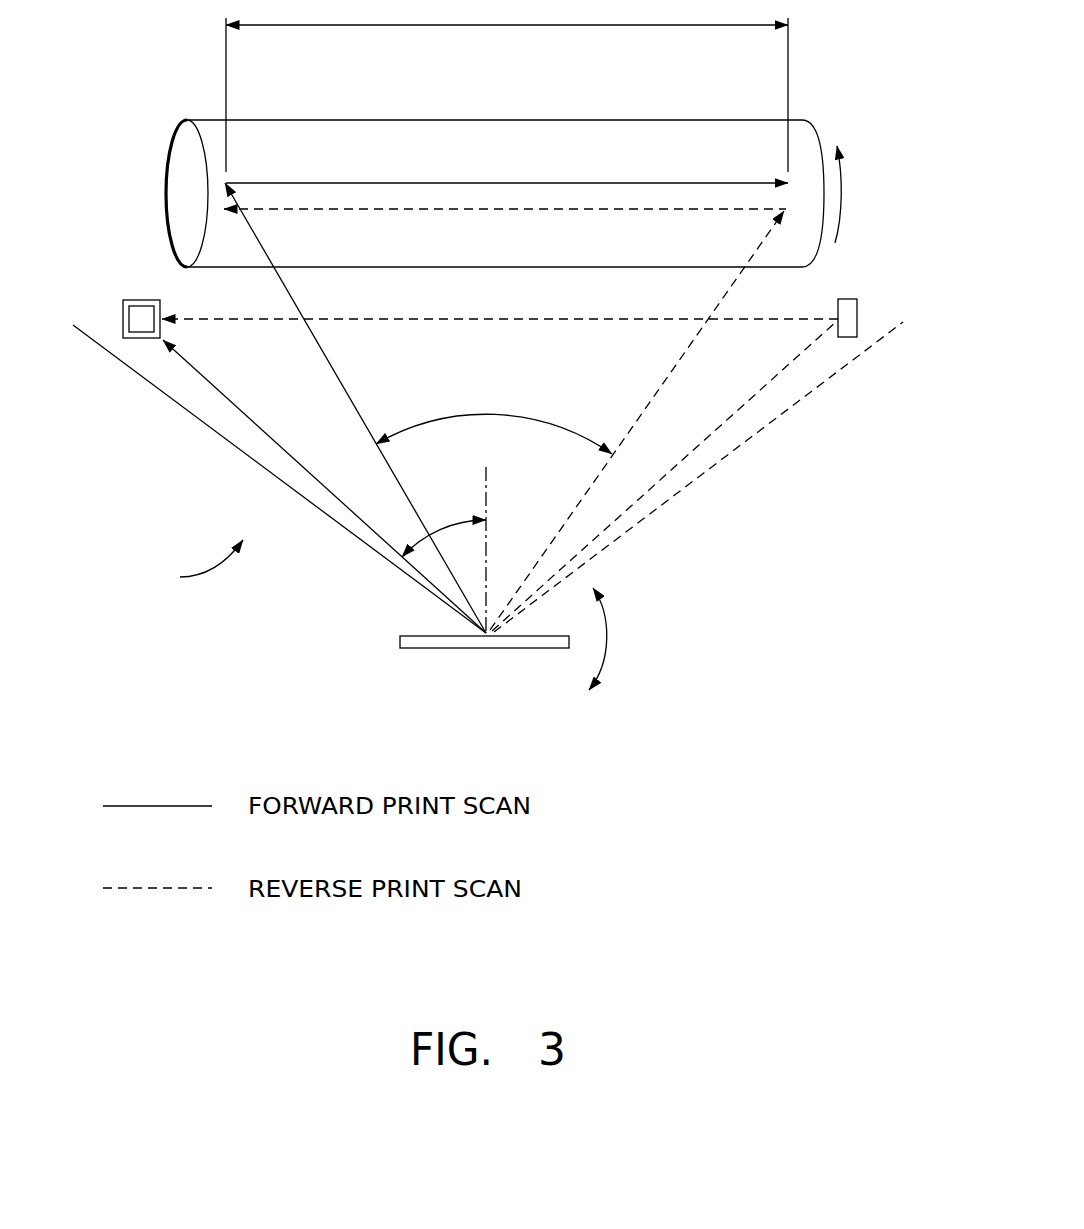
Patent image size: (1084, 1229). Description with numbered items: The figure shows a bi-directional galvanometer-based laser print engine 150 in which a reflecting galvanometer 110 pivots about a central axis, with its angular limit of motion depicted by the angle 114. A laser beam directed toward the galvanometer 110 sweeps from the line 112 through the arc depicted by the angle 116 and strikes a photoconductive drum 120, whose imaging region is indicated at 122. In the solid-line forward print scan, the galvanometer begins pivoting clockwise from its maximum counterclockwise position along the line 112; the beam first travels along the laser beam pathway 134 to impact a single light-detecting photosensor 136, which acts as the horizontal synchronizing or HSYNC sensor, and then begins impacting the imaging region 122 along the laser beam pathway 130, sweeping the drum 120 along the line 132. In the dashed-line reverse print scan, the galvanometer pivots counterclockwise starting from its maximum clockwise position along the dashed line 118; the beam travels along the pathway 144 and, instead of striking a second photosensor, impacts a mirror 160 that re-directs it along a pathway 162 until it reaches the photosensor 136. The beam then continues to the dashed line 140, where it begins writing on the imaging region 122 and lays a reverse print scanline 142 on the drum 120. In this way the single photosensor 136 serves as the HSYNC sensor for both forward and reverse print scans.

The reflecting galvanometer 110 is at (453, 649).
The line 112 is at (208, 430).
The angle 114 is at (434, 530).
The angle 116 is at (466, 418).
The dashed line 118 is at (738, 447).
The photoconductive drum 120 is at (178, 150).
The imaging region 122 is at (493, 27).
The laser beam pathway 130 is at (293, 300).
The line 132 is at (403, 183).
The laser beam pathway 134 is at (195, 368).
The photosensor 136 is at (147, 300).
The dashed line 140 is at (692, 338).
The reverse print scanline 142 is at (633, 210).
The pathway 144 is at (783, 365).
The print engine 150 is at (185, 564).
The mirror 160 is at (847, 299).
The pathway 162 is at (511, 318).